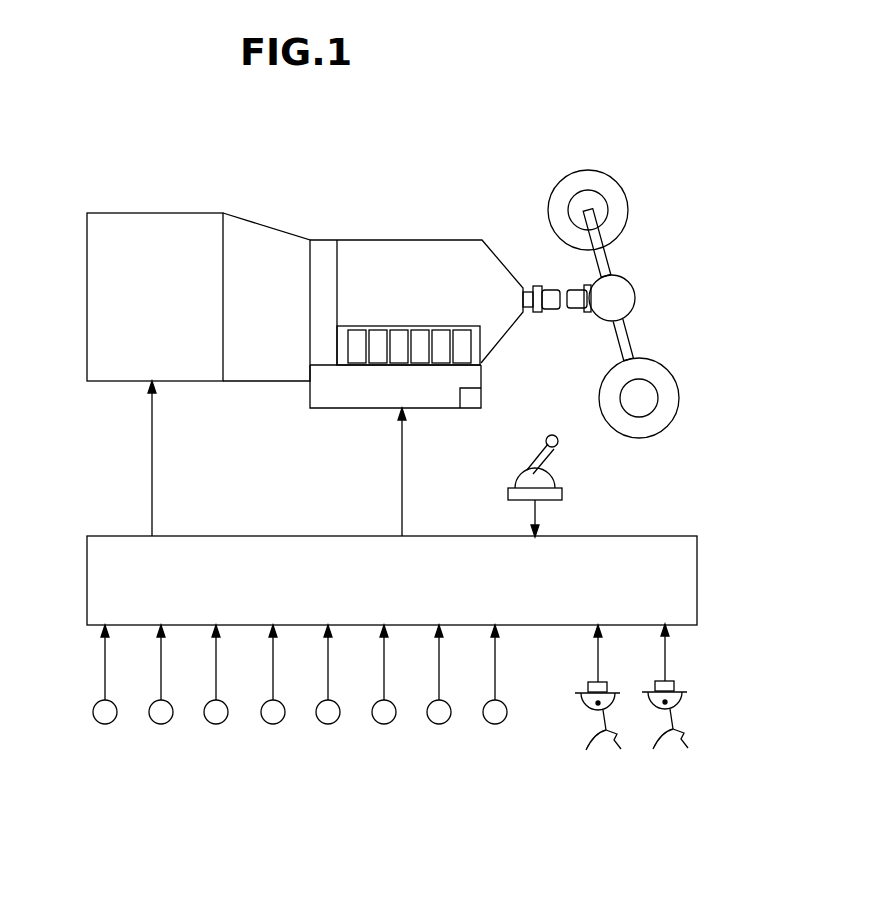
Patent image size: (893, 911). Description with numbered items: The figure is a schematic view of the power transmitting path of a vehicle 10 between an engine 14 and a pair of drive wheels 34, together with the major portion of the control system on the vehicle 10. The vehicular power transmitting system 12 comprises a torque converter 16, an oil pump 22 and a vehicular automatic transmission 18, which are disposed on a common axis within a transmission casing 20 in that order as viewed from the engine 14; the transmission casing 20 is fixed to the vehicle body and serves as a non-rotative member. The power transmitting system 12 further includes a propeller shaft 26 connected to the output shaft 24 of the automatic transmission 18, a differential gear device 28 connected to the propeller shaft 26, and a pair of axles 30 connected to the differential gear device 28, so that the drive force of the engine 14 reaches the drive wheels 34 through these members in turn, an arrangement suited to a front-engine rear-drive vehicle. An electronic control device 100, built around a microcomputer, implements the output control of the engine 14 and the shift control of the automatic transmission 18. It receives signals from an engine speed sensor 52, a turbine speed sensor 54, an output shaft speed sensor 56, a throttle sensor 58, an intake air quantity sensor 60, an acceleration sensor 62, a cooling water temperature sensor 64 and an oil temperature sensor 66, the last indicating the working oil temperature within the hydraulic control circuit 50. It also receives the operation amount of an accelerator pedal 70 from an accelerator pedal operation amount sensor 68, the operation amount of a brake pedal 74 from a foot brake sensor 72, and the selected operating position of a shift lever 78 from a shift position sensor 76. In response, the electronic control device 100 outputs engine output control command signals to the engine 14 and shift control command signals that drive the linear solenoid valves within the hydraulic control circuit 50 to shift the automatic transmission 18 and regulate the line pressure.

The vehicle 10 is at (474, 108).
The vehicular power transmitting system 12 is at (357, 165).
The engine 14 is at (171, 223).
The torque converter 16 is at (246, 223).
The vehicular automatic transmission 18 is at (397, 243).
The transmission casing 20 is at (500, 357).
The oil pump 22 is at (324, 243).
The output shaft 24 is at (530, 292).
The propeller shaft 26 is at (573, 308).
The differential gear device 28 is at (621, 297).
The axles 30 is at (608, 257).
The drive wheels 34 is at (589, 177).
The hydraulic control circuit 50 is at (419, 402).
The engine speed sensor 52 is at (105, 724).
The turbine speed sensor 54 is at (161, 724).
The output shaft speed sensor 56 is at (216, 724).
The throttle sensor 58 is at (273, 724).
The intake air quantity sensor 60 is at (328, 724).
The acceleration sensor 62 is at (384, 724).
The cooling water temperature sensor 64 is at (439, 724).
The oil temperature sensor 66 is at (495, 724).
The accelerator pedal operation amount sensor 68 is at (588, 688).
The accelerator pedal 70 is at (589, 704).
The foot brake sensor 72 is at (655, 688).
The brake pedal 74 is at (660, 703).
The shift position sensor 76 is at (510, 496).
The shift lever 78 is at (548, 437).
The electronic control device 100 is at (632, 548).